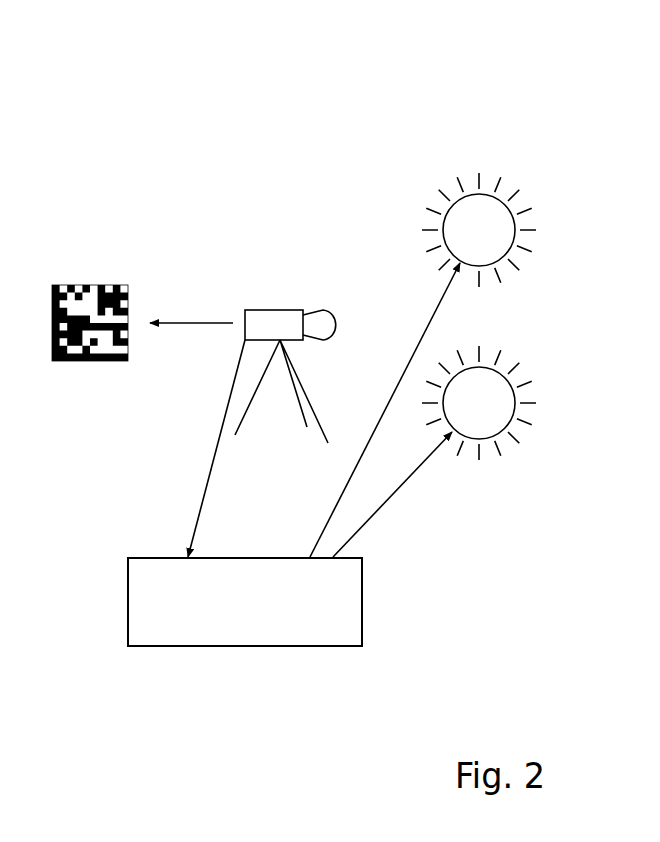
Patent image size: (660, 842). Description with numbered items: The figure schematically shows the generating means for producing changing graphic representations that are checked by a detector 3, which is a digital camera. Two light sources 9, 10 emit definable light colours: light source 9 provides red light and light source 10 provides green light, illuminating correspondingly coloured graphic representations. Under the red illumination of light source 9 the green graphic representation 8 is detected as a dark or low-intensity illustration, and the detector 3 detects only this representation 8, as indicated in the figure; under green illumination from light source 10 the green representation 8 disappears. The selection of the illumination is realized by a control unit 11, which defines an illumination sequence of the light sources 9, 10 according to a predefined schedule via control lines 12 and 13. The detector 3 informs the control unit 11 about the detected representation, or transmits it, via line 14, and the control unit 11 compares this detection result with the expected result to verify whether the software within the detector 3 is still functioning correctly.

The detector 3 is at (282, 310).
The graphic representation 8 is at (55, 285).
The light source 9 is at (472, 193).
The light source 10 is at (510, 425).
The control unit 11 is at (363, 605).
The control line 12 is at (370, 440).
The control line 13 is at (402, 483).
The line 14 is at (232, 392).